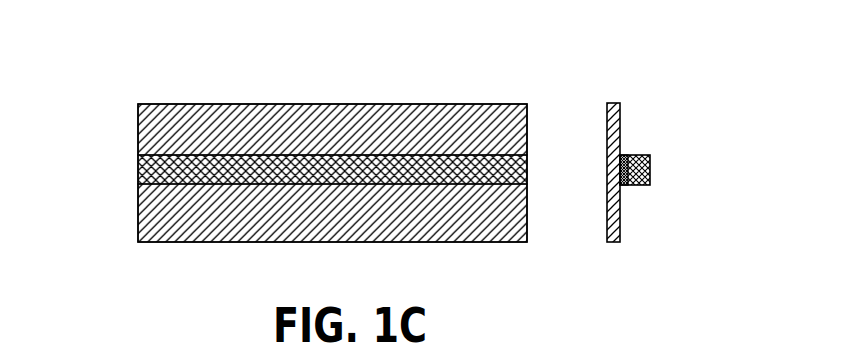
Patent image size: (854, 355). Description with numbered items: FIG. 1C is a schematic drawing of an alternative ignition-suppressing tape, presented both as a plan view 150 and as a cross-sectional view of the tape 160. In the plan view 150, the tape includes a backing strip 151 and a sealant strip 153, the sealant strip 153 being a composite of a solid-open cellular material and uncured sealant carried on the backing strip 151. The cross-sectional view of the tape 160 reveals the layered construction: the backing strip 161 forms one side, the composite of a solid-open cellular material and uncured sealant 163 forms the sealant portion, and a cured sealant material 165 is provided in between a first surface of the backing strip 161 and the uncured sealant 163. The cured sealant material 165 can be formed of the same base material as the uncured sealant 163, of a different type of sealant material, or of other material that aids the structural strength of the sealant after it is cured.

The ignition-suppressing tape in plan view 150 is at (289, 134).
The backing strip 151 is at (148, 128).
The sealant strip 153 is at (148, 167).
The cross-sectional view of the tape 160 is at (677, 144).
The backing strip 161 is at (630, 121).
The composite of a solid-open cellular material and uncured sealant 163 is at (657, 171).
The cured sealant material 165 is at (629, 196).